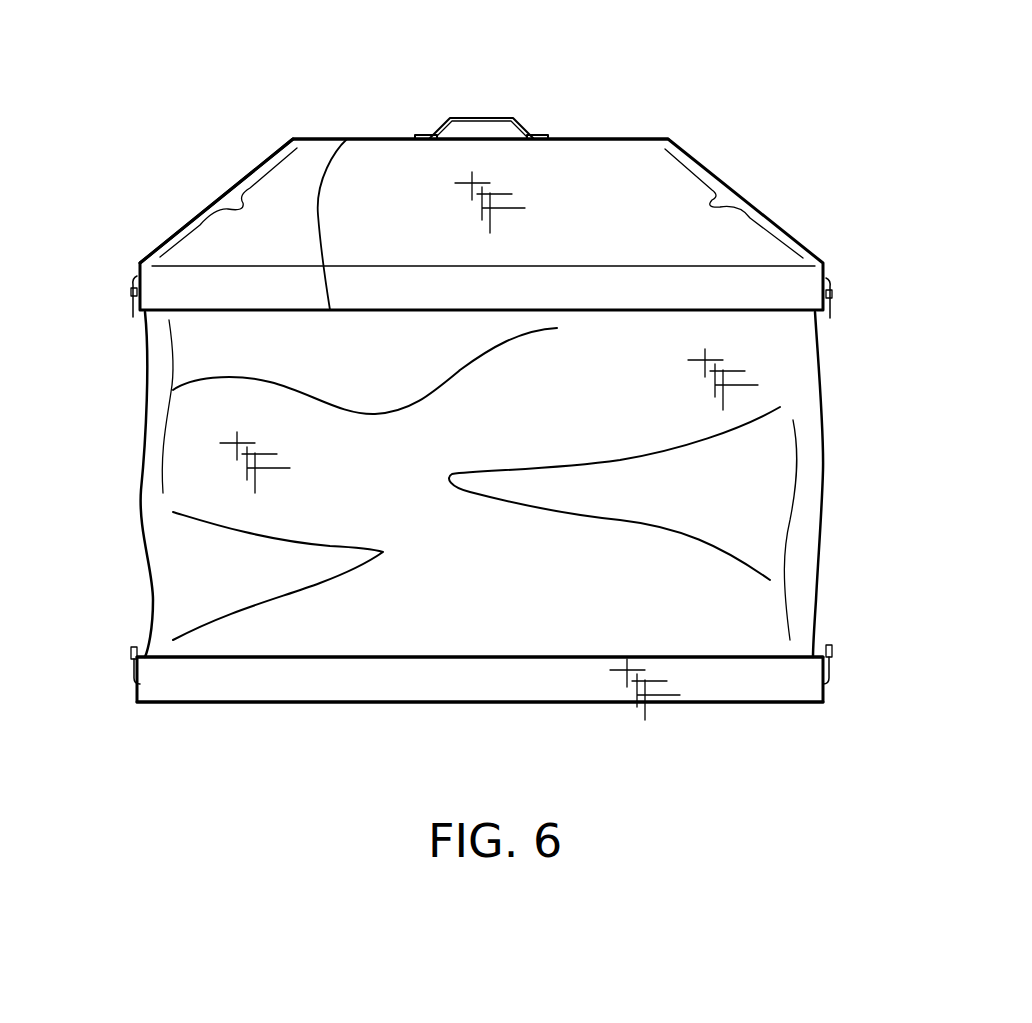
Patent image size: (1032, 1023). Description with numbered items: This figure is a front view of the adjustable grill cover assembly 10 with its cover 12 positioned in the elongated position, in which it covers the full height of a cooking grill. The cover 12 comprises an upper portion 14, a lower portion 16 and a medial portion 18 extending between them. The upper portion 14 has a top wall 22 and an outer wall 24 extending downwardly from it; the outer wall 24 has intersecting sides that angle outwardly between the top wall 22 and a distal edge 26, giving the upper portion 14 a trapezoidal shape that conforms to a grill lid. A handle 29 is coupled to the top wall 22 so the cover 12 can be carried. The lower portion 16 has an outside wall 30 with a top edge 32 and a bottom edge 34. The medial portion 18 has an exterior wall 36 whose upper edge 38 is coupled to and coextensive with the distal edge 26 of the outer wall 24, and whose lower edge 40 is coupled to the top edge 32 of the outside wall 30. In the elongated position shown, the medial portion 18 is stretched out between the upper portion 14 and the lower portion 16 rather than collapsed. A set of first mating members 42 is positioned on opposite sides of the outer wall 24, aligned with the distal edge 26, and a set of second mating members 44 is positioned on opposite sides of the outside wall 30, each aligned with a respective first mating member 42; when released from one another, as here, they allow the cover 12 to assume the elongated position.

The adjustable grill cover assembly 10 is at (170, 92).
The cover 12 is at (748, 172).
The upper portion 14 is at (268, 144).
The lower portion 16 is at (303, 722).
The medial portion 18 is at (122, 522).
The top wall 22 is at (598, 138).
The outer wall 24 is at (233, 232).
The distal edge 26 is at (783, 311).
The handle 29 is at (470, 120).
The outside wall 30 is at (582, 680).
The top edge 32 is at (200, 657).
The bottom edge 34 is at (190, 702).
The exterior wall 36 is at (185, 447).
The upper edge 38 is at (347, 139).
The lower edge 40 is at (460, 657).
The first mating members 42 is at (130, 292).
The second mating members 44 is at (131, 662).